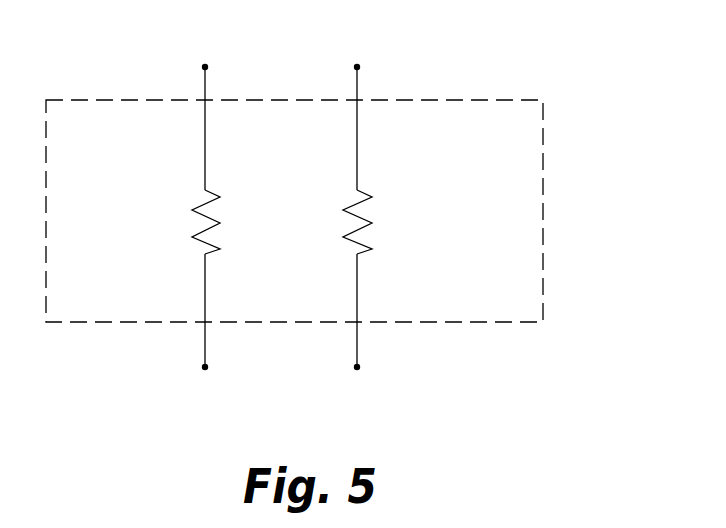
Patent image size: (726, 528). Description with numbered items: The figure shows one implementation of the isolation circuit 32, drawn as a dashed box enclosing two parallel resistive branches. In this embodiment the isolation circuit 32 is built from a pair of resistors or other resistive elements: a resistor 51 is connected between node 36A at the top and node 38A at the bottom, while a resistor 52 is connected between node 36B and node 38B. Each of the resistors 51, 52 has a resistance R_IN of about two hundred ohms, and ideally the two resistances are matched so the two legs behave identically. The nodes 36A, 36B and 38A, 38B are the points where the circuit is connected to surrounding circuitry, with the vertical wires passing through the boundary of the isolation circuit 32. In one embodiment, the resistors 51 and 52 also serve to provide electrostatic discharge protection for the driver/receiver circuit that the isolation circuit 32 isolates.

The isolation circuit 32 is at (543, 160).
The node 36A is at (205, 67).
The node 36B is at (357, 67).
The node 38A is at (205, 367).
The node 38B is at (357, 367).
The resistor 51 is at (216, 199).
The resistor 52 is at (366, 250).